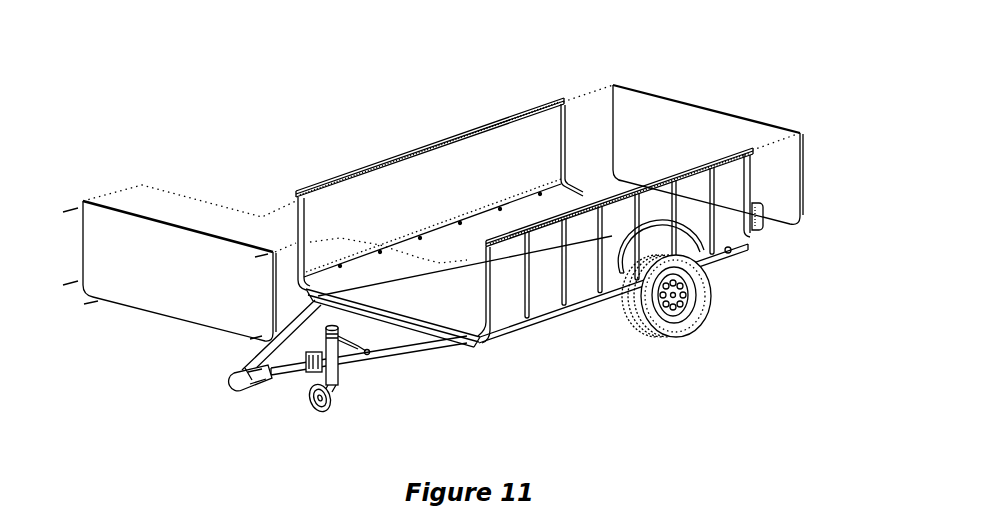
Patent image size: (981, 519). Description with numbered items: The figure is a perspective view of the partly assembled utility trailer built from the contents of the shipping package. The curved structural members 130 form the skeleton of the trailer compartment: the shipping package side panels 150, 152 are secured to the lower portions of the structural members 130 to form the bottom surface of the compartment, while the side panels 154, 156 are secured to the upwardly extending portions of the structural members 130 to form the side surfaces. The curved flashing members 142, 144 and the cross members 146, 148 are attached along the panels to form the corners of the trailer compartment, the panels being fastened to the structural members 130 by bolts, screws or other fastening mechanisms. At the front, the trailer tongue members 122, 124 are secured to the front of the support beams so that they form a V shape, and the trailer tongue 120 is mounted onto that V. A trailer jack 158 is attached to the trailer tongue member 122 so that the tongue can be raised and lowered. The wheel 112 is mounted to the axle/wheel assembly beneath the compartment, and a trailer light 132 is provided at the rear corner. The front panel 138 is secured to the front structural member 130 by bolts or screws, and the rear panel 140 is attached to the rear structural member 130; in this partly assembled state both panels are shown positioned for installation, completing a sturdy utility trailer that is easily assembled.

The wheel 112 is at (693, 313).
The trailer tongue 120 is at (245, 387).
The trailer tongue member 122 is at (407, 355).
The trailer tongue member 124 is at (260, 350).
The curved structural member 130 is at (535, 307).
The trailer light 132 is at (737, 200).
The front panel 138 is at (137, 270).
The rear panel 140 is at (708, 98).
The curved flashing member 142 is at (520, 197).
The curved flashing member 144 is at (505, 318).
The cross member 146 is at (743, 150).
The cross member 148 is at (453, 137).
The side panel 150 is at (447, 265).
The side panel 152 is at (443, 307).
The side panel 154 is at (510, 145).
The side panel 156 is at (758, 230).
The trailer jack 158 is at (337, 405).